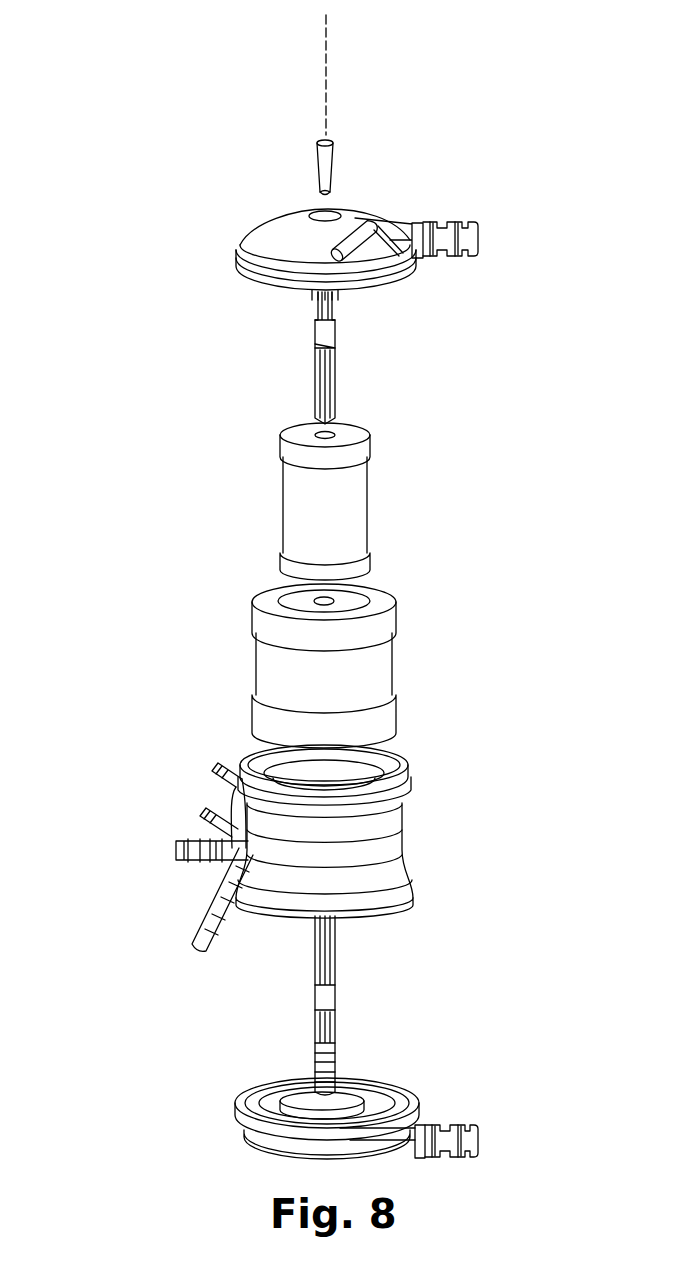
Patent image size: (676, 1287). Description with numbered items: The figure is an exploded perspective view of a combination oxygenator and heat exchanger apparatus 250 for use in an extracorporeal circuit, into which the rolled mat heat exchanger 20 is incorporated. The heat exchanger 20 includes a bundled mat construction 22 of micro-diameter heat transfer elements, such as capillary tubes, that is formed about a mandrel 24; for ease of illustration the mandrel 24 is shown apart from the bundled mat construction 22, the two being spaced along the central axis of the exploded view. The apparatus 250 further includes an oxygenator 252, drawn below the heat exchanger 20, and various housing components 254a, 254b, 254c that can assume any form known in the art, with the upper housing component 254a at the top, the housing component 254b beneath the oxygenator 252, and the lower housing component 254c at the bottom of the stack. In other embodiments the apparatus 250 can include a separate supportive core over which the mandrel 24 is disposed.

The combination oxygenator and heat exchanger apparatus 250 is at (103, 373).
The housing component 254a is at (281, 233).
The mandrel 24 is at (332, 335).
The rolled mat heat exchanger 20 is at (368, 521).
The bundled mat construction 22 is at (297, 515).
The oxygenator 252 is at (392, 675).
The housing component 254b is at (390, 838).
The housing component 254c is at (380, 1115).